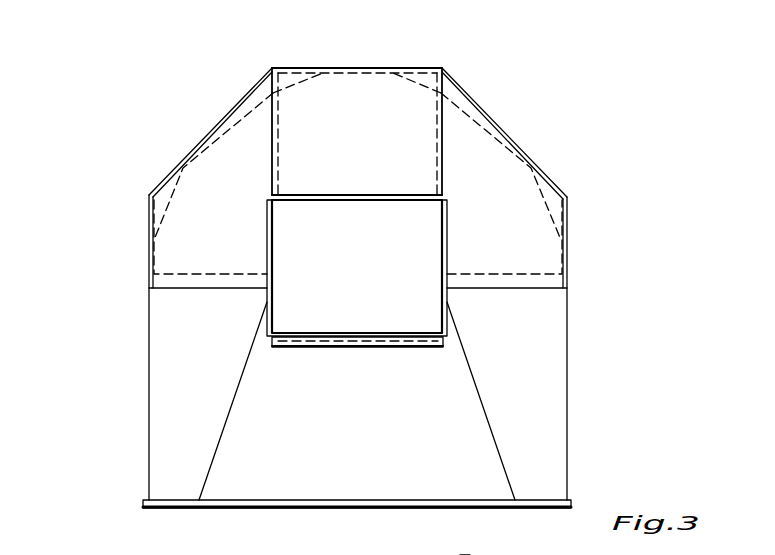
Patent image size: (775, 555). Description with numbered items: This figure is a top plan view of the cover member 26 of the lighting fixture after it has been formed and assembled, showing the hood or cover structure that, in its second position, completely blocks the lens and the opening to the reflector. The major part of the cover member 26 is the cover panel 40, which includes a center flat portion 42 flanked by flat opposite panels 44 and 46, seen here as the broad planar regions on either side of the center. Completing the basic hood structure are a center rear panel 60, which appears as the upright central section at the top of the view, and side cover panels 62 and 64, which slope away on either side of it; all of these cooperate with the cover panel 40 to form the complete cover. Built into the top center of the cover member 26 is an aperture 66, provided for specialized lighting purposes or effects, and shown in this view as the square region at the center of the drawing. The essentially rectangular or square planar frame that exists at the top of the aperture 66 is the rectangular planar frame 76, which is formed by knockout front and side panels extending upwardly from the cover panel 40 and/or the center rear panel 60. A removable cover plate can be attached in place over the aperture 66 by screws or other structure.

The cover member 26 is at (625, 257).
The cover panel 40 is at (568, 373).
The center flat portion 42 is at (360, 473).
The flat opposite panel 44 is at (170, 423).
The flat opposite panel 46 is at (531, 390).
The center rear panel 60 is at (389, 144).
The side cover panel 62 is at (245, 184).
The side cover panel 64 is at (502, 225).
The aperture 66 is at (442, 245).
The rectangular planar frame 76 is at (465, 554).